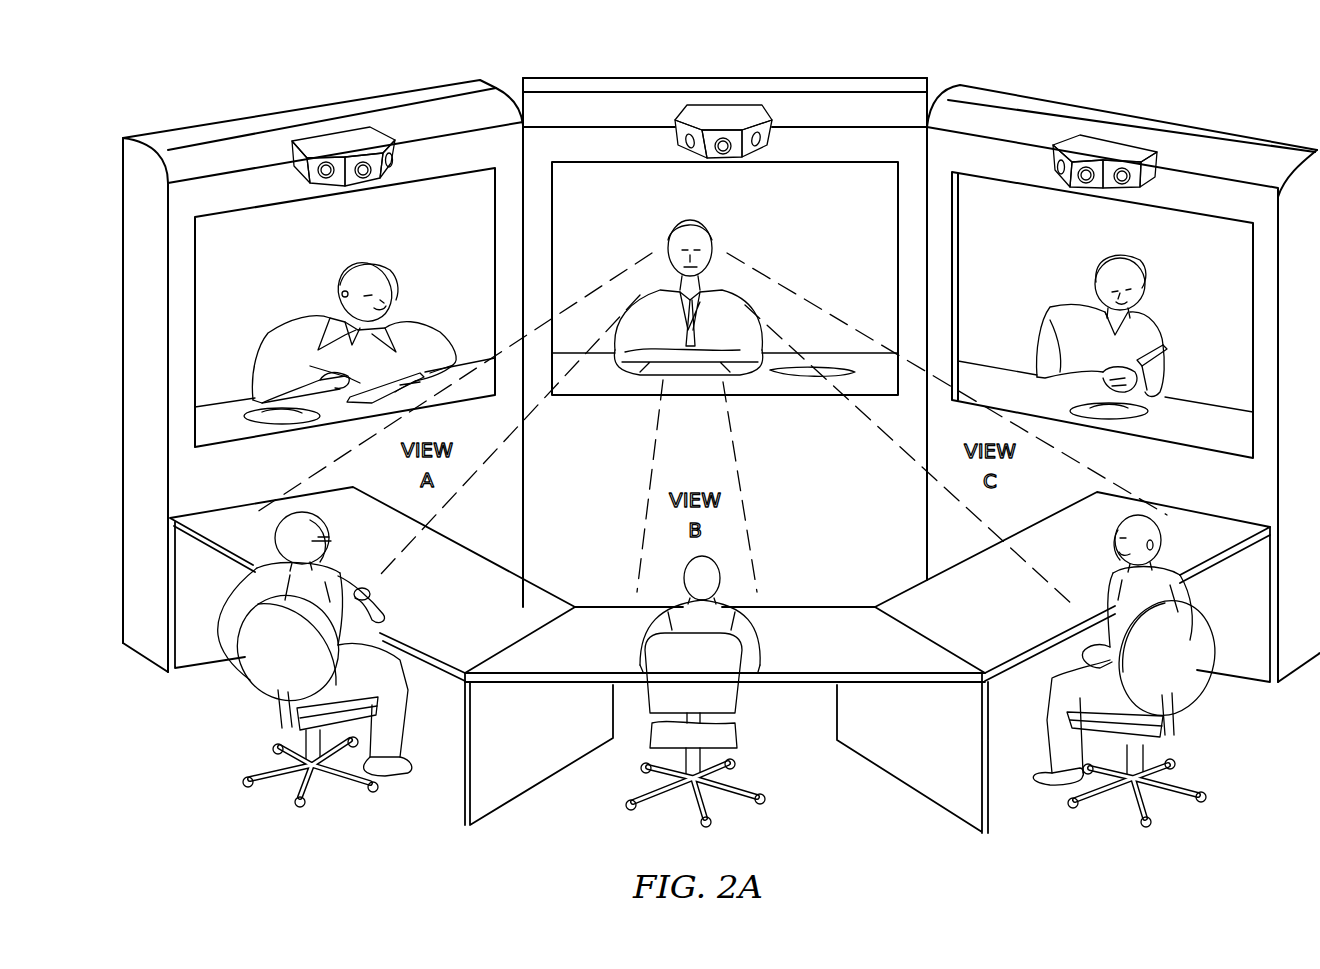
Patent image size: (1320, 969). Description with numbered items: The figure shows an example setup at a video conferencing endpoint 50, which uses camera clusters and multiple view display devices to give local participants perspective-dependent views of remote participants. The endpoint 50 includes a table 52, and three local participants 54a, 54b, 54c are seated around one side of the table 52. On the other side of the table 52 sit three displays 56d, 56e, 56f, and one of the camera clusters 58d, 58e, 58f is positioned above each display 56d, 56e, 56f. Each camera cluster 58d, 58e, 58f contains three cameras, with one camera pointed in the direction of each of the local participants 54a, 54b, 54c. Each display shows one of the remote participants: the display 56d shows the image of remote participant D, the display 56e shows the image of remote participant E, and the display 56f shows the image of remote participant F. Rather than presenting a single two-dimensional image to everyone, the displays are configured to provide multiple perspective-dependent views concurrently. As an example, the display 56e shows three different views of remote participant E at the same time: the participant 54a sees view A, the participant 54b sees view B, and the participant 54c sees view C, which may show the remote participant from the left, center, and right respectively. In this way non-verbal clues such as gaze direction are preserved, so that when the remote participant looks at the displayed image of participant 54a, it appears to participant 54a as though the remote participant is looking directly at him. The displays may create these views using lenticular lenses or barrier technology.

The endpoint 50 is at (1252, 107).
The table 52 is at (230, 484).
The participant 54a is at (370, 598).
The participant 54b is at (643, 640).
The participant 54c is at (1127, 583).
The display 56d is at (287, 293).
The display 56e is at (823, 259).
The display 56f is at (1217, 299).
The camera cluster 58d is at (322, 145).
The camera cluster 58e is at (740, 113).
The camera cluster 58f is at (1127, 150).